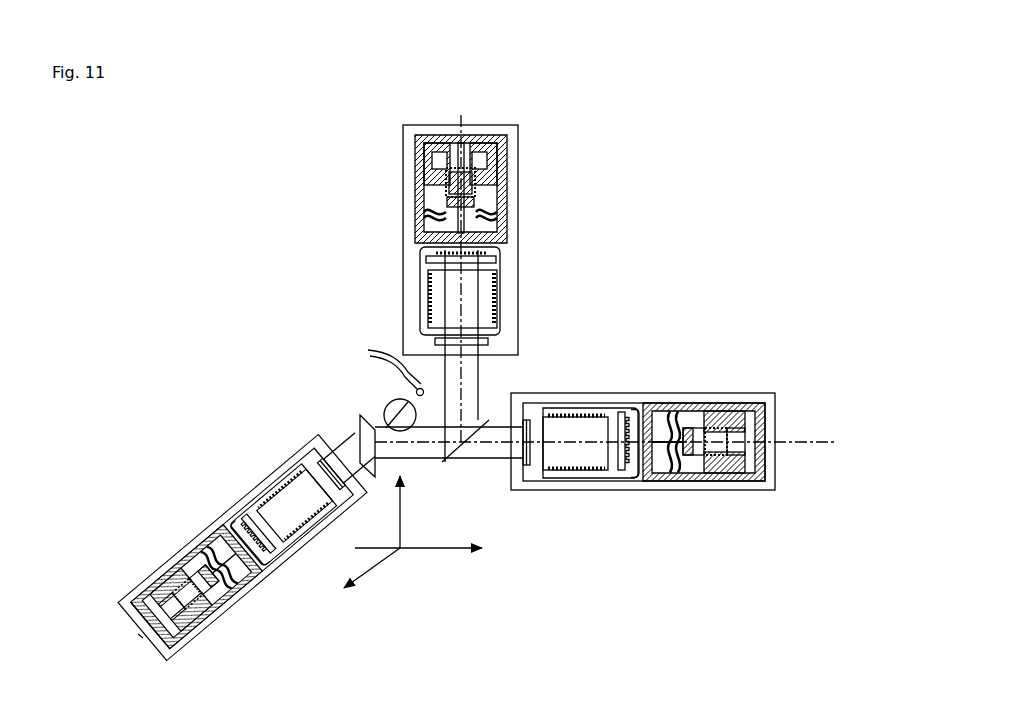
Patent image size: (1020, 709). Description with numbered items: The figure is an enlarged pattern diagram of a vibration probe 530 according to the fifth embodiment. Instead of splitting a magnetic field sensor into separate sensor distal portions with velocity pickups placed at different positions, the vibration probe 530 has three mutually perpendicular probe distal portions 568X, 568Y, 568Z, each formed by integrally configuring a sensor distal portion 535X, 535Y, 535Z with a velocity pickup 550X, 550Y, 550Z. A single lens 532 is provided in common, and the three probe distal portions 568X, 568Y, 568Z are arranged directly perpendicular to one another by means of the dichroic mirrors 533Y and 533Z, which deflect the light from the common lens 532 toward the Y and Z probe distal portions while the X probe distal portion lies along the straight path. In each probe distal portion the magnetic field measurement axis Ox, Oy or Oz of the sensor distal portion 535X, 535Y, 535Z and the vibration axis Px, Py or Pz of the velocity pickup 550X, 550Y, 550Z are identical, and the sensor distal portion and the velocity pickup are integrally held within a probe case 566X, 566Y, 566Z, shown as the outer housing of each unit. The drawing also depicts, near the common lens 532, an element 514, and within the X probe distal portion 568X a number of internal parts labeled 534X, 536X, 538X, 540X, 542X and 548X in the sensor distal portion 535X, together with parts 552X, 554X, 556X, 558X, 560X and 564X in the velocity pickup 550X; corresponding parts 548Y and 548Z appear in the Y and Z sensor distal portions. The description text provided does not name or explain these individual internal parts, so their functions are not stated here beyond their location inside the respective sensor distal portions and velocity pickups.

The light source 514 is at (368, 351).
The vibration probe 530 is at (688, 183).
The lens 532 is at (394, 400).
The dichroic mirror 533Y is at (459, 460).
The dichroic mirror 533Z is at (361, 418).
The light receiving plate 534X is at (525, 418).
The sensor distal portion 535X is at (568, 525).
The lens barrel (X) 536X is at (563, 422).
The plate (X) 538X is at (618, 415).
The comb electrode (X) 540X is at (628, 470).
The bracket (X) 542X is at (634, 472).
The lens holder (X) 548X is at (560, 472).
The velocity pickup 550X is at (704, 500).
The actuator frame (X) 552X is at (652, 412).
The leaf springs (X) 554X is at (673, 412).
The movable block (X) 556X is at (688, 428).
The yoke (X) 558X is at (745, 403).
The coil (X) 560X is at (727, 430).
The magnet (X) 564X is at (748, 460).
The probe case 566X is at (718, 487).
The probe distal portion 568X is at (655, 548).
The sensor distal portion 535Y is at (503, 296).
The lens holder (Y) 548Y is at (497, 302).
The velocity pickup 550Y is at (523, 196).
The probe case 566Y is at (518, 156).
The probe distal portion 568Y is at (553, 233).
The sensor distal portion 535Z is at (273, 470).
The lens holder (Z) 548Z is at (298, 473).
The velocity pickup 550Z is at (177, 538).
The probe case 566Z is at (227, 608).
The probe distal portion 568Z is at (188, 477).